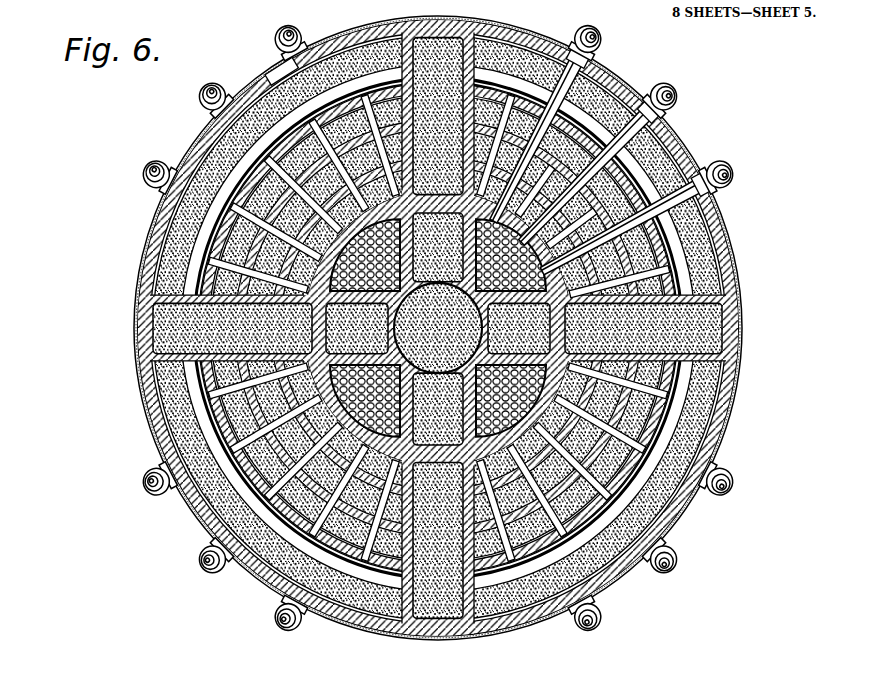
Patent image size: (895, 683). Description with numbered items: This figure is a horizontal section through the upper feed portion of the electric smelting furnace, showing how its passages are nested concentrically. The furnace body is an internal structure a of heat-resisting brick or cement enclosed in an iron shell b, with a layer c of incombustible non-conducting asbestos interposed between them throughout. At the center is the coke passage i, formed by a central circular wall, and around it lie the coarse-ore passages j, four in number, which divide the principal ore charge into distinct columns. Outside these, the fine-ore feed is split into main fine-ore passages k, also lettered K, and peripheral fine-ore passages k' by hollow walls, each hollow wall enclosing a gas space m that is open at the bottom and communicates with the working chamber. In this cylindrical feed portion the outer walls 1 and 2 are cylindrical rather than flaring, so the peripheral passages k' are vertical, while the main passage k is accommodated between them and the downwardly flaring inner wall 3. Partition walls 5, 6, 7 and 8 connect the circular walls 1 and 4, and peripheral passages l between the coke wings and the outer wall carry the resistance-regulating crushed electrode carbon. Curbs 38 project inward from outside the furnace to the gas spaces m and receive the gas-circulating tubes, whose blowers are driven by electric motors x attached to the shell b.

The outer circular wall 1 is at (353, 33).
The hollow outer wall 2 is at (268, 82).
The inner wall 3 is at (335, 328).
The circular wall 4 is at (438, 328).
The partition wall 5 is at (140, 362).
The partition wall 6 is at (734, 297).
The partition wall 7 is at (386, 34).
The partition wall 8 is at (409, 633).
The curb 38 is at (600, 60).
The internal structure a is at (150, 400).
The metallic shell b is at (160, 430).
The non-conducting layer c is at (166, 450).
The coke passage i is at (718, 322).
The coarse-ore passage j is at (697, 150).
The main fine-ore passage k is at (464, 328).
The main fine-ore passage K is at (196, 150).
The peripheral fine-ore passage k' is at (438, 286).
The peripheral passage for resistance regulating material l is at (741, 334).
The gas space m is at (732, 232).
The electric motor x is at (278, 36).